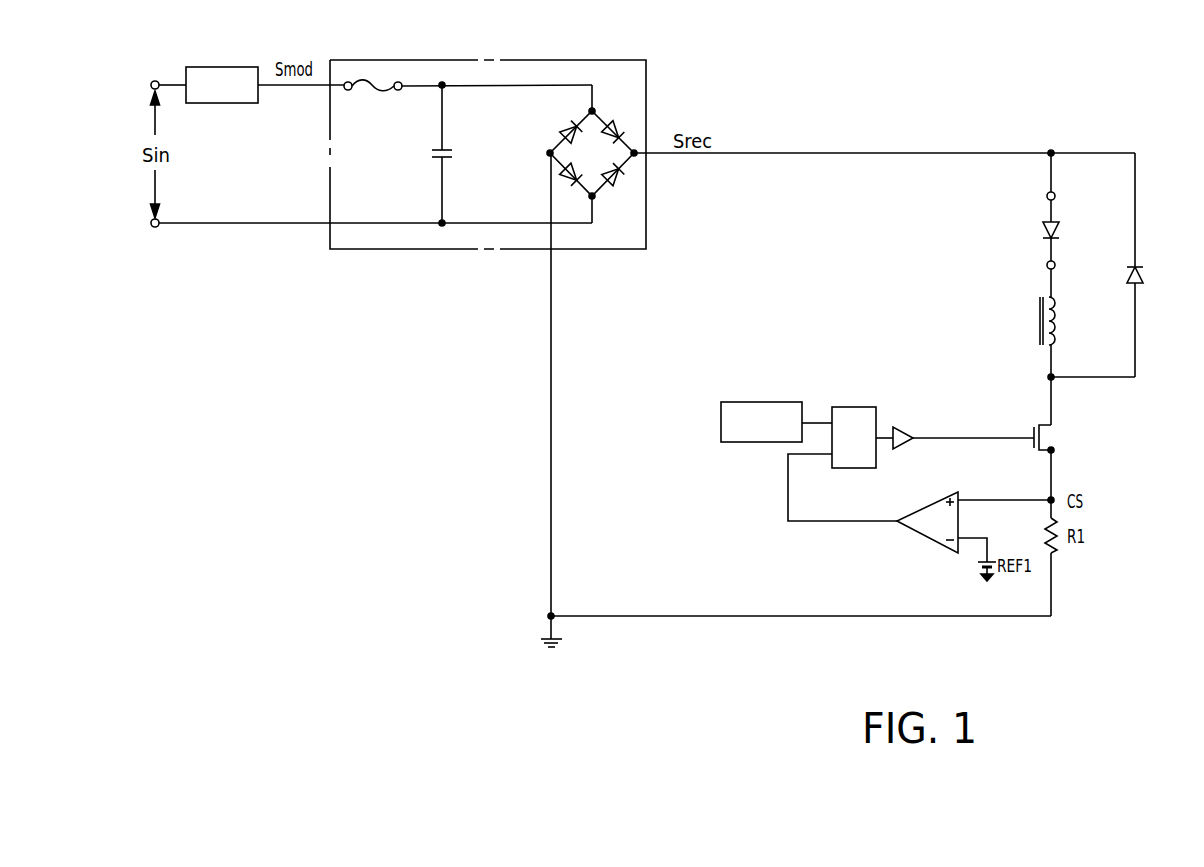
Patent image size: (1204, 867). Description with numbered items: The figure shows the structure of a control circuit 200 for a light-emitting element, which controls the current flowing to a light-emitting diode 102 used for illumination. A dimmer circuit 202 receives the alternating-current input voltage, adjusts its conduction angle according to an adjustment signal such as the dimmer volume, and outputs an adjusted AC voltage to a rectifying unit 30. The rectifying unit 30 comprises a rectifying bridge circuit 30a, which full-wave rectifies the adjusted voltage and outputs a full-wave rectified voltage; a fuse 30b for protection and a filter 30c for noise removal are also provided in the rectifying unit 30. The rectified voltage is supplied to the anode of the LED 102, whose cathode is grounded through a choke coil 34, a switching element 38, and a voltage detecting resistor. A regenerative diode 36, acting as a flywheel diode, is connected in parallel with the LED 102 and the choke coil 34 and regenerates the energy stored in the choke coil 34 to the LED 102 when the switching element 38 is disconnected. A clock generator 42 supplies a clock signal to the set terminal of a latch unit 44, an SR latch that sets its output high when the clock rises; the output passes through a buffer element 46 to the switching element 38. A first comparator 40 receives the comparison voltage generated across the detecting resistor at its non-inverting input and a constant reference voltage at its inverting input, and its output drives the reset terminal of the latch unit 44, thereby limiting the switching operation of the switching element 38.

The control circuit 200 is at (727, 733).
The dimmer circuit 202 is at (228, 66).
The rectifying unit 30 is at (401, 250).
The rectifying bridge circuit 30a is at (597, 111).
The fuse 30b is at (377, 97).
The filter 30c is at (457, 155).
The light-emitting diode 102 is at (1064, 230).
The regenerative diode 36 is at (1150, 276).
The choke coil 34 is at (1060, 325).
The switching element 38 is at (1060, 440).
The clock generator 42 is at (789, 402).
The latch unit 44 is at (871, 407).
The buffer element 46 is at (905, 427).
The first comparator 40 is at (924, 530).